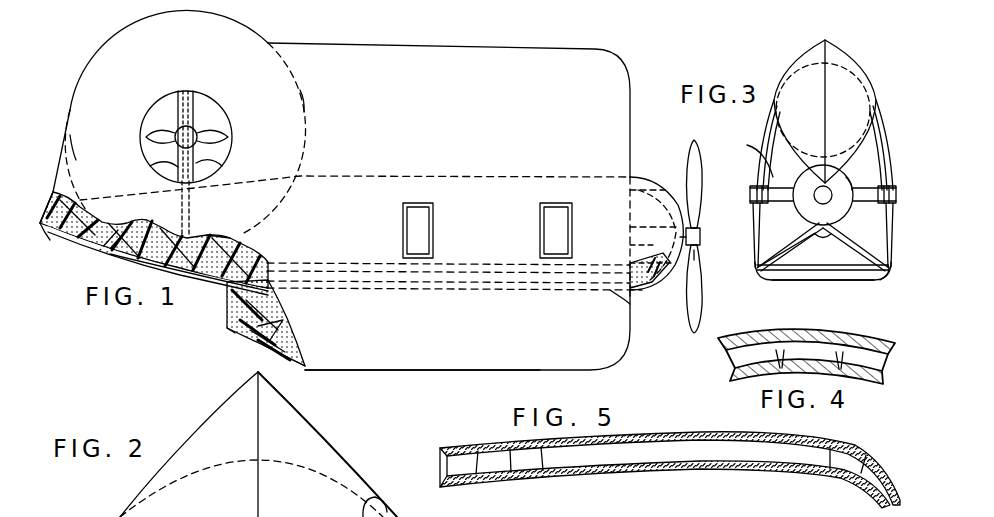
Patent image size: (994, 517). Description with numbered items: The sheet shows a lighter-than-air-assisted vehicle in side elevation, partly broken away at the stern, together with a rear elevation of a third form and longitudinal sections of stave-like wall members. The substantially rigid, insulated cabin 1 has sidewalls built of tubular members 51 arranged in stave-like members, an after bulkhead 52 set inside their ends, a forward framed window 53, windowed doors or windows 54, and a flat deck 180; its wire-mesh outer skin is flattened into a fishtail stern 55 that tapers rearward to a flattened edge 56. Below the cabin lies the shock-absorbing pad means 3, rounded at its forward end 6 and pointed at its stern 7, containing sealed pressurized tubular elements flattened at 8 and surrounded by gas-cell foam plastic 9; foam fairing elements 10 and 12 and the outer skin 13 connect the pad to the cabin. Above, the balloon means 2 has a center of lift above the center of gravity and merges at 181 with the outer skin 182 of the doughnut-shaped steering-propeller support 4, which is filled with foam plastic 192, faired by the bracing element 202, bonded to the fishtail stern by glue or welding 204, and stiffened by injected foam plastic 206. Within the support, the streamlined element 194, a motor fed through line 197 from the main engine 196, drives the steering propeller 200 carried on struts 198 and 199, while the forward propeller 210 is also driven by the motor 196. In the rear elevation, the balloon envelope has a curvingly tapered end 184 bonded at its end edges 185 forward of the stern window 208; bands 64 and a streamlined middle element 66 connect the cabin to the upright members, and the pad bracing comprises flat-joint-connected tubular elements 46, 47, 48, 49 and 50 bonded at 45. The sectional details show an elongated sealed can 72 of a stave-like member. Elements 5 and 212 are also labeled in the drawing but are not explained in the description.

In FIG. 1, the cabin 1 is at (522, 182).
In FIG. 3, the cabin 1 is at (829, 219).
In FIG. 1, the balloon means 2 is at (640, 92).
In FIG. 3, the balloon means 2 is at (800, 66).
In FIG. 1, the shock-absorbing pad means 3 is at (458, 339).
In FIG. 3, the shock-absorbing pad means 3 is at (803, 287).
In FIG. 1, the steering propeller and its support 4 is at (232, 104).
In FIG. 3, the strut 5 is at (842, 234).
In FIG. 1, the forward end of pad 6 is at (612, 300).
In FIG. 1, the stern of pad 7 is at (232, 332).
In FIG. 1, the flattened tube portions 8 is at (284, 322).
In FIG. 1, the foam plastic 9 is at (300, 362).
In FIG. 1, the fairing element 10 is at (630, 300).
In FIG. 1, the fairing element 12 is at (227, 313).
In FIG. 1, the outer skin 13 is at (478, 370).
In FIG. 3, the bond 45 is at (800, 244).
In FIG. 3, the tubular element 46 is at (752, 224).
In FIG. 3, the tubular element 47 is at (780, 281).
In FIG. 3, the tubular element 48 is at (882, 127).
In FIG. 3, the tubular element 49 is at (797, 250).
In FIG. 3, the tubular element 50 is at (855, 272).
In FIG. 1, the tubular members 51 is at (197, 277).
In FIG. 1, the after bulkhead 52 is at (126, 202).
In FIG. 1, the forward framed window 53 is at (658, 210).
In FIG. 1, the windowed members 54 is at (425, 225).
In FIG. 1, the fishtail stern 55 is at (44, 194).
In FIG. 1, the flattened edge 56 is at (76, 232).
In FIG. 3, the band 64 is at (752, 190).
In FIG. 3, the streamlined middle element 66 is at (755, 158).
In FIG. 5, the sealed can 72 is at (696, 462).
In FIG. 1, the flat deck 180 is at (650, 263).
In FIG. 1, the merger 181 is at (306, 98).
In FIG. 1, the outer skin of doughnut-shaped support 182 is at (247, 22).
In FIG. 2, the curvingly tapered end 184 is at (236, 448).
In FIG. 3, the adjoining end edges 185 is at (826, 94).
In FIG. 1, the foam plastic 192 is at (209, 235).
In FIG. 1, the streamlined element 194 is at (173, 181).
In FIG. 1, the main engine or motor 196 is at (638, 228).
In FIG. 1, the line 197 is at (328, 266).
In FIG. 1, the propeller-supporting strut 198 is at (190, 92).
In FIG. 1, the propeller-supporting strut 199 is at (218, 164).
In FIG. 1, the steering propeller 200 is at (222, 127).
In FIG. 1, the doughnut-tube-bracing element 202 is at (72, 142).
In FIG. 1, the bonding material 204 is at (258, 260).
In FIG. 1, the foam plastic 206 is at (59, 249).
In FIG. 3, the stern window 208 is at (846, 175).
In FIG. 1, the forward propeller 210 is at (700, 268).
In FIG. 1, the stern dashed 212 is at (664, 255).